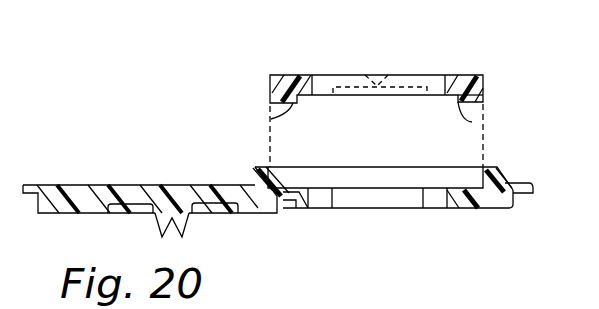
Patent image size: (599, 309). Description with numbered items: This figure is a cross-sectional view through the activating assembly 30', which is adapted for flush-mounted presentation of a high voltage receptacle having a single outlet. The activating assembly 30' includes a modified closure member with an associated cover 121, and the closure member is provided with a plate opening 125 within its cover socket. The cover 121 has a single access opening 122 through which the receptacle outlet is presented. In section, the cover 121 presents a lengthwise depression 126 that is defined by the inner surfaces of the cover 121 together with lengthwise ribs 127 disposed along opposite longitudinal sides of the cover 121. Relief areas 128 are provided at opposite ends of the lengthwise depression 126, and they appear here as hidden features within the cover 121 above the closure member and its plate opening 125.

The activating assembly 30' is at (150, 187).
The cover 121 is at (488, 82).
The access opening 122 is at (451, 41).
The plate opening 125 is at (385, 200).
The lengthwise depression 126 is at (455, 96).
The lengthwise ribs 127 is at (270, 118).
The relief areas 128 is at (359, 93).